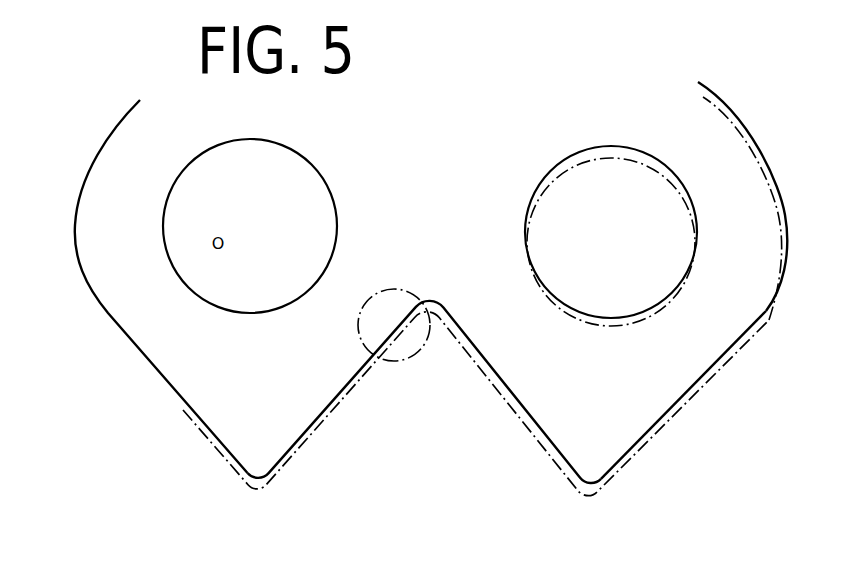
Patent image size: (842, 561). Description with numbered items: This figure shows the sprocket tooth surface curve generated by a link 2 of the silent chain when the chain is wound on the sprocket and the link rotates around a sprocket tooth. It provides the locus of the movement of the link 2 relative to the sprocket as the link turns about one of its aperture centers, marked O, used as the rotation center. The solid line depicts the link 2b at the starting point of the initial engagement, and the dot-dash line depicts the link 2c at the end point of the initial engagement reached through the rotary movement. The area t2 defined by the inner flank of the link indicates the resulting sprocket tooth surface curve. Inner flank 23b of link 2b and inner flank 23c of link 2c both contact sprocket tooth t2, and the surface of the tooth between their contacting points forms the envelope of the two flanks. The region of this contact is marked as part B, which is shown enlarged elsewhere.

The link 2 is at (110, 96).
The link 2b is at (726, 93).
The link 2c is at (726, 376).
The inner flank 23b is at (283, 463).
The inner flank 23c is at (325, 419).
The part B is at (402, 360).
The sprocket tooth t2 is at (452, 447).